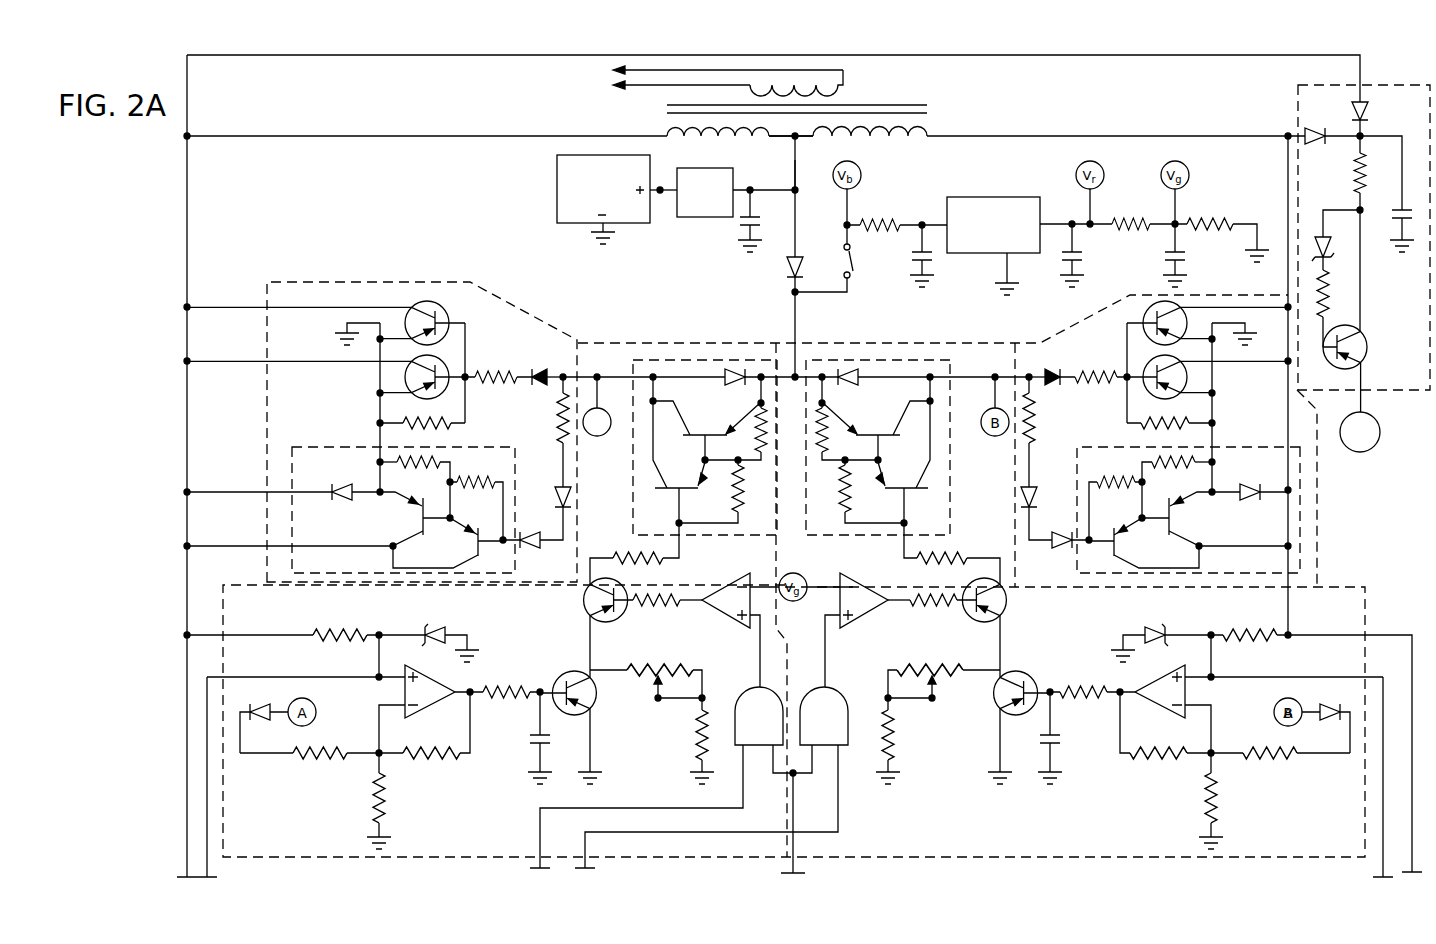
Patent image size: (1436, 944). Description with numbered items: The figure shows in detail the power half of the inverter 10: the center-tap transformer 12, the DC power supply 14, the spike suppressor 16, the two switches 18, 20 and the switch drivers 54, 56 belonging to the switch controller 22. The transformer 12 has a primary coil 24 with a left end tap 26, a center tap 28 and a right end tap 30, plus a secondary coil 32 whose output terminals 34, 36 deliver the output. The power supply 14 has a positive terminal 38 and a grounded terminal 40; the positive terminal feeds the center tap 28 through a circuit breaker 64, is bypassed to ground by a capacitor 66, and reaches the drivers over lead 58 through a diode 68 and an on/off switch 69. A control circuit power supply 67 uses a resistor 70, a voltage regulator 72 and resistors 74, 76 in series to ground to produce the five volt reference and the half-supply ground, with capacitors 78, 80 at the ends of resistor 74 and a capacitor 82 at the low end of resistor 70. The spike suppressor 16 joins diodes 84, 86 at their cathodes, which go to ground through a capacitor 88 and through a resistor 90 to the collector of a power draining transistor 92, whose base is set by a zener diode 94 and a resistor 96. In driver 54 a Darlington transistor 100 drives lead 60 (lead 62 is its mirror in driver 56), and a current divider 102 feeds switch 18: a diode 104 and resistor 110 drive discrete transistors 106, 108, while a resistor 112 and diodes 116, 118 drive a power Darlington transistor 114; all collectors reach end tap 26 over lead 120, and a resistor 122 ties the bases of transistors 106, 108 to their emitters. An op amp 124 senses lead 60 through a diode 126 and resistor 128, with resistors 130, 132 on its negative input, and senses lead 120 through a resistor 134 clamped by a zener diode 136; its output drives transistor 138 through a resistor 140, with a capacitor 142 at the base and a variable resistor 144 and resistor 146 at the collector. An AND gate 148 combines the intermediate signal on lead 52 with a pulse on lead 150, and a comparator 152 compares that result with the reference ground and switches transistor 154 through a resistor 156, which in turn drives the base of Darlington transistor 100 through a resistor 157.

The inverter 10 is at (165, 343).
The center-tap transformer 12 is at (940, 107).
The DC power supply 14 is at (557, 185).
The spike suppressor 16 is at (1430, 398).
The switch 18 is at (337, 280).
The switch 20 is at (1322, 500).
The switch controller 22 is at (670, 330).
The primary coil 24 is at (752, 140).
The left end tap 26 is at (667, 134).
The center tap 28 is at (797, 160).
The right end tap 30 is at (930, 134).
The secondary coil 32 is at (846, 84).
The output terminal 34 is at (665, 84).
The output terminal 36 is at (716, 72).
The positive terminal 38 is at (660, 188).
The grounded terminal 40 is at (610, 233).
The lead 52 is at (805, 870).
The switch driver 54 is at (400, 858).
The switch driver 56 is at (1073, 860).
The lead 58 is at (790, 317).
The lead 60 is at (605, 372).
The lead 62 is at (968, 376).
The circuit breaker 64 is at (693, 218).
The capacitor 66 is at (747, 226).
The control circuit power supply 67 is at (1060, 167).
The diode 68 is at (784, 266).
The on/off switch 69 is at (844, 257).
The resistor 70 is at (877, 219).
The voltage regulator 72 is at (990, 196).
The resistor 74 is at (1128, 222).
The resistor 76 is at (1221, 222).
The capacitor 78 is at (1165, 263).
The capacitor 80 is at (1082, 256).
The capacitor 82 is at (912, 251).
The diode 84 is at (1370, 114).
The diode 86 is at (1300, 126).
The capacitor 88 is at (1393, 210).
The resistor 90 is at (1352, 170).
The power draining transistor 92 is at (1368, 348).
The zener diode 94 is at (1320, 235).
The resistor 96 is at (1332, 298).
The Darlington transistor 100 is at (686, 360).
The current divider 102 is at (536, 368).
The diode 104 is at (553, 366).
The discrete transistor 106 is at (449, 316).
The discrete transistor 108 is at (455, 366).
The resistor 110 is at (495, 386).
The resistor 112 is at (557, 412).
The power Darlington transistor 114 is at (340, 446).
The diode 116 is at (556, 488).
The diode 118 is at (535, 533).
The lead 120 is at (185, 452).
The resistor 122 is at (457, 426).
The op amp 124 is at (438, 708).
The diode 126 is at (262, 703).
The resistor 128 is at (298, 760).
The resistor 130 is at (372, 798).
The resistor 132 is at (442, 762).
The resistor 134 is at (333, 630).
The zener diode 136 is at (441, 626).
The common-emitter transistor 138 is at (574, 671).
The resistor 140 is at (510, 688).
The capacitor 142 is at (533, 733).
The variable resistor 144 is at (636, 686).
The resistor 146 is at (698, 740).
The AND gate 148 is at (745, 688).
The lead 150 is at (540, 822).
The comparator 152 is at (716, 585).
The transistor 154 is at (614, 621).
The resistor 156 is at (660, 593).
The resistor 157 is at (620, 553).